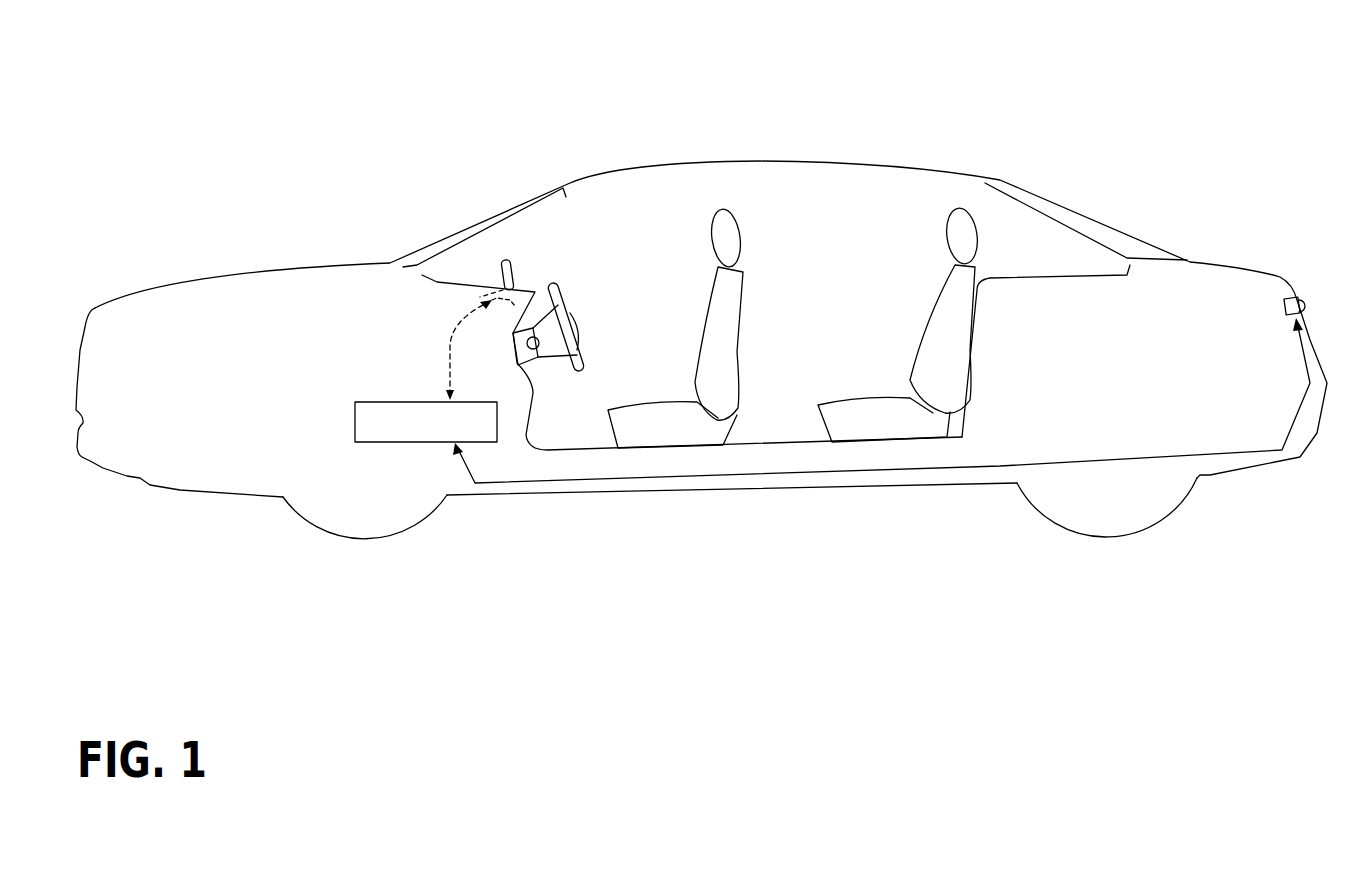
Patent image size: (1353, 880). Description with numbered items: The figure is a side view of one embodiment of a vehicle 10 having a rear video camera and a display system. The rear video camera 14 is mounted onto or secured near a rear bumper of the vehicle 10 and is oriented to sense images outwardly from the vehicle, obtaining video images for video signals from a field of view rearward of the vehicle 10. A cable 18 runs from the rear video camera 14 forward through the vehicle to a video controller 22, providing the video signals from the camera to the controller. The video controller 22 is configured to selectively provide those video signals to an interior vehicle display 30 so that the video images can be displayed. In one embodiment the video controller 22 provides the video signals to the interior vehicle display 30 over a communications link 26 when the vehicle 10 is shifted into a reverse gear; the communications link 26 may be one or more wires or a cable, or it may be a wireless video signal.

The vehicle 10 is at (822, 128).
The rear video camera 14 is at (1284, 305).
The cable 18 is at (1090, 462).
The video controller 22 is at (386, 443).
The communications link 26 is at (450, 363).
The interior vehicle display 30 is at (503, 290).